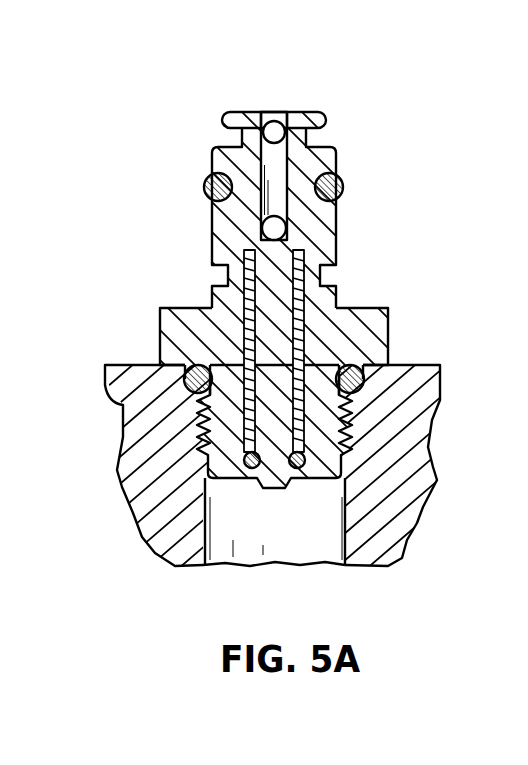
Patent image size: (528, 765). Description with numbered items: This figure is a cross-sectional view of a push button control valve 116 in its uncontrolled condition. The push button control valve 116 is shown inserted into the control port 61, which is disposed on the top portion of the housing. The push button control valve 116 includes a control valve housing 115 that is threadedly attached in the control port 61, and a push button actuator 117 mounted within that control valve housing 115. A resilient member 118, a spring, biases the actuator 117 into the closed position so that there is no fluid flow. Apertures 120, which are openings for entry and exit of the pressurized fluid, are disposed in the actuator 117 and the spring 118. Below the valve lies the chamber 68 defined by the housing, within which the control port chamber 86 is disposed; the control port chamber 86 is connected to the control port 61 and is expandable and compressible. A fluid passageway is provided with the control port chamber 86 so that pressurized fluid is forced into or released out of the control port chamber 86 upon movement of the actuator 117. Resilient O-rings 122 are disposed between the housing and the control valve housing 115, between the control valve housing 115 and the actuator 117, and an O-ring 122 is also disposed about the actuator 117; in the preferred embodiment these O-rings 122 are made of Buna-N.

The push button control valve 116 is at (181, 122).
The push button actuator 117 is at (237, 120).
The apertures 120 is at (277, 130).
The resilient O-rings 122 is at (343, 186).
The control valve housing 115 is at (198, 313).
The resilient member 118 is at (333, 283).
The chamber 68 is at (120, 370).
The control port 61 is at (142, 367).
The control port chamber 86 is at (243, 520).